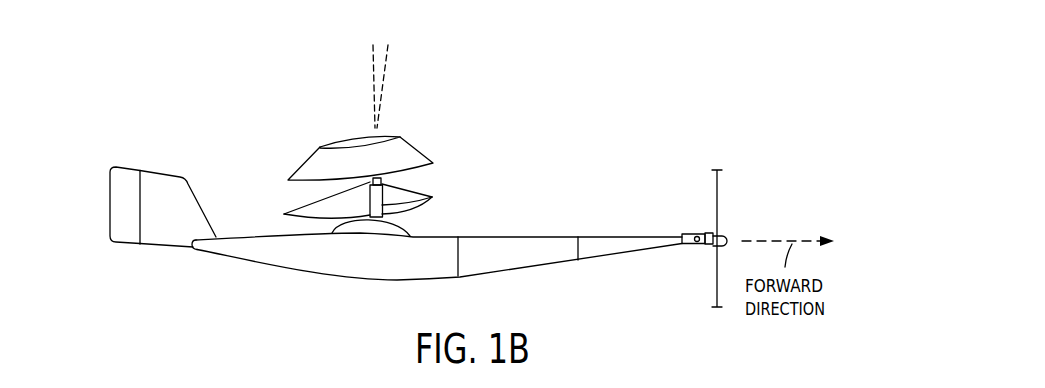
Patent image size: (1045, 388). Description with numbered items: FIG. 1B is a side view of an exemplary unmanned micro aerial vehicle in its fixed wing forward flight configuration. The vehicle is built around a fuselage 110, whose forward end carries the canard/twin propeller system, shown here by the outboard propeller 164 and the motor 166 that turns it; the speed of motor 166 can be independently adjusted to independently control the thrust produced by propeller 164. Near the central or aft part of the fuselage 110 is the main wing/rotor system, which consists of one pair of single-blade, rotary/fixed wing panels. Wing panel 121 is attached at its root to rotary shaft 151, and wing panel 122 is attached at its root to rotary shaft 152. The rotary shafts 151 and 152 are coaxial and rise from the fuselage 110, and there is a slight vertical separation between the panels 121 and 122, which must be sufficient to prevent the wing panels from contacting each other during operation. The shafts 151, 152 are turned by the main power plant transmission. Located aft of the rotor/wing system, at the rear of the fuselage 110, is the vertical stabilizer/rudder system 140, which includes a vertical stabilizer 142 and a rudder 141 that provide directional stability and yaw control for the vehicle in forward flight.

The fuselage 110 is at (525, 246).
The wing panel 121 is at (307, 207).
The wing panel 122 is at (318, 165).
The vertical stabilizer/rudder system 140 is at (145, 138).
The rudder 141 is at (115, 203).
The vertical stabilizer 142 is at (186, 192).
The rotary shaft 151 is at (378, 202).
The rotary shaft 152 is at (382, 180).
The outboard propeller 164 is at (720, 193).
The motor 166 is at (688, 235).